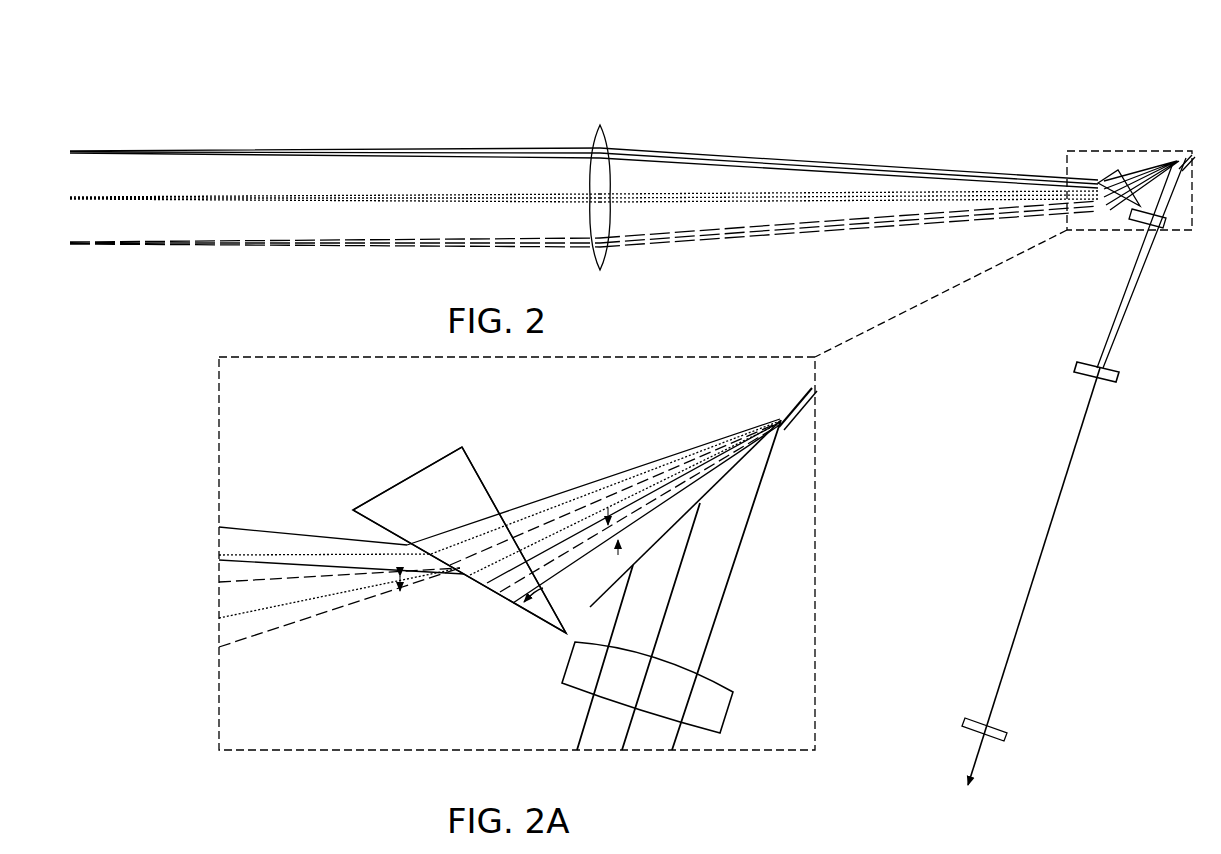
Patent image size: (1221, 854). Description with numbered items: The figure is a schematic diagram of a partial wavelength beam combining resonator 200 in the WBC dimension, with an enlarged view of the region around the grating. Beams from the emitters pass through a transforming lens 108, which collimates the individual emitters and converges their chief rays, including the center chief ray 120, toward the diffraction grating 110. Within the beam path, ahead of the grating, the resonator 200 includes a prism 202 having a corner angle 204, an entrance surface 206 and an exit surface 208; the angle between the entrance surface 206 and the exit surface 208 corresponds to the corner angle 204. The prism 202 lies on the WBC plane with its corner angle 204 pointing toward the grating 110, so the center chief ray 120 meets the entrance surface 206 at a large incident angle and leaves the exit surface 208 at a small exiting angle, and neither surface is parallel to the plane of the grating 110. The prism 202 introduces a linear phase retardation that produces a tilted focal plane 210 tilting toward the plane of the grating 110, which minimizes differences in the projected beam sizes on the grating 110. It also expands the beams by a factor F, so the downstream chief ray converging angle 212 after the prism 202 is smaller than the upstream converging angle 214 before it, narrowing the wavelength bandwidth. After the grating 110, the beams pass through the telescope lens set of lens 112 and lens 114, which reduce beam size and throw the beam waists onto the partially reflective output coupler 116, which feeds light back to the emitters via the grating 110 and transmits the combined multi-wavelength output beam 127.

In FIG. 2, the WBC resonator 200 is at (228, 74).
In FIG. 2, the transforming lens 108 is at (612, 132).
In FIG. 2, the diffraction grating 110 is at (1187, 163).
In FIG. 2A, the diffraction grating 110 is at (796, 401).
In FIG. 2, the lens 112 is at (1147, 218).
In FIG. 2A, the lens 112 is at (730, 711).
In FIG. 2, the lens 114 is at (1126, 373).
In FIG. 2, the partially reflective output coupler 116 is at (1013, 731).
In FIG. 2, the chief ray 120 is at (624, 197).
In FIG. 2A, the chief ray 120 is at (344, 590).
In FIG. 2, the combined multi-wavelength output beam 127 is at (980, 762).
In FIG. 2, the prism 202 is at (1119, 188).
In FIG. 2A, the prism 202 is at (423, 468).
In FIG. 2A, the corner angle 204 is at (518, 610).
In FIG. 2A, the entrance surface 206 is at (384, 523).
In FIG. 2A, the exit surface 208 is at (485, 486).
In FIG. 2A, the tilted focal plane 210 is at (809, 412).
In FIG. 2A, the chief ray converging angle β 212 is at (640, 511).
In FIG. 2A, the converging angle θ 214 is at (407, 590).